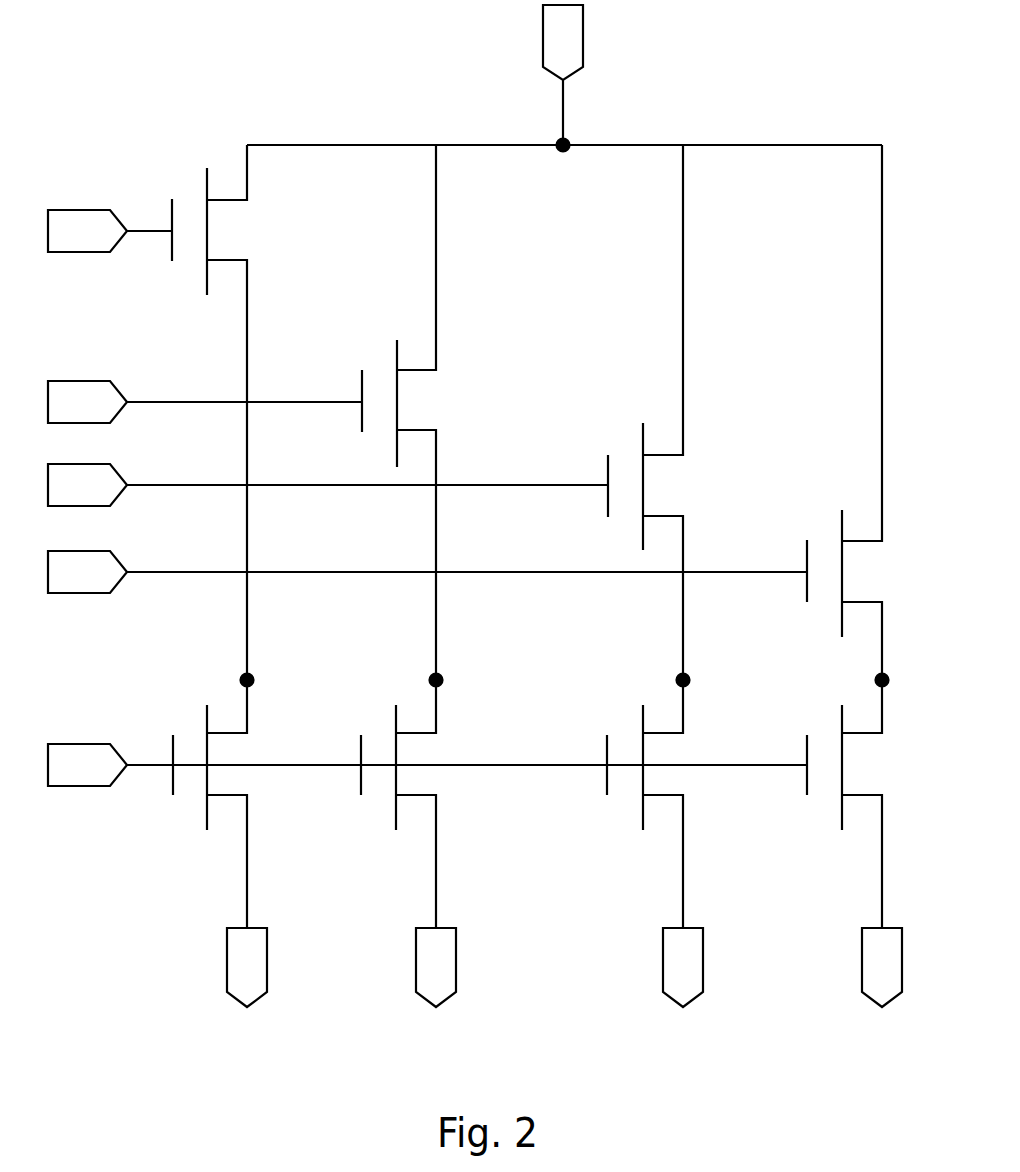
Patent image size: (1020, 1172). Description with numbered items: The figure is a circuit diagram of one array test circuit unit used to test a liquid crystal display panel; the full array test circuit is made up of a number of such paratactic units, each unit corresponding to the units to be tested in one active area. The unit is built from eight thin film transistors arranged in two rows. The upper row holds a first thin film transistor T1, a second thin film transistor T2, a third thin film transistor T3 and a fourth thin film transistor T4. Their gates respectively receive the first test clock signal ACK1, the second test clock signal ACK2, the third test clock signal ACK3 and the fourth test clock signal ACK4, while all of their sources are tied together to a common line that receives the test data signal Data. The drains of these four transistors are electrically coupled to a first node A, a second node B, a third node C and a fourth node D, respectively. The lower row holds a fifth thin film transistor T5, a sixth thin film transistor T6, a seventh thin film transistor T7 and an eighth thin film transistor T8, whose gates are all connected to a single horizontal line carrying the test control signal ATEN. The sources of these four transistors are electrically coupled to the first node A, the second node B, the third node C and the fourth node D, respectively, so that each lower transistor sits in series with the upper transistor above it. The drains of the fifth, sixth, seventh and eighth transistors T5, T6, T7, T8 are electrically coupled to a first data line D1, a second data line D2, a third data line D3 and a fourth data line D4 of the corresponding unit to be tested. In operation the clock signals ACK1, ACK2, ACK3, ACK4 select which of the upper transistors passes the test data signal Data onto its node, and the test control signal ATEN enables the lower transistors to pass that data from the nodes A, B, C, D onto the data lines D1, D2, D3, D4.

The test data signal Data is at (621, 78).
The first thin film transistor T1 is at (229, 412).
The second thin film transistor T2 is at (419, 412).
The third thin film transistor T3 is at (664, 412).
The fourth thin film transistor T4 is at (866, 412).
The fifth thin film transistor T5 is at (204, 804).
The sixth thin film transistor T6 is at (391, 804).
The seventh thin film transistor T7 is at (635, 804).
The eighth thin film transistor T8 is at (842, 804).
The first node A is at (268, 679).
The second node B is at (452, 679).
The third node C is at (708, 679).
The fourth node D is at (898, 679).
The first test clock signal ACK1 is at (108, 205).
The second test clock signal ACK2 is at (203, 376).
The third test clock signal ACK3 is at (328, 469).
The fourth test clock signal ACK4 is at (427, 556).
The test control signal ATEN is at (426, 739).
The first data line D1 is at (217, 967).
The second data line D2 is at (402, 967).
The third data line D3 is at (629, 967).
The fourth data line D4 is at (846, 967).